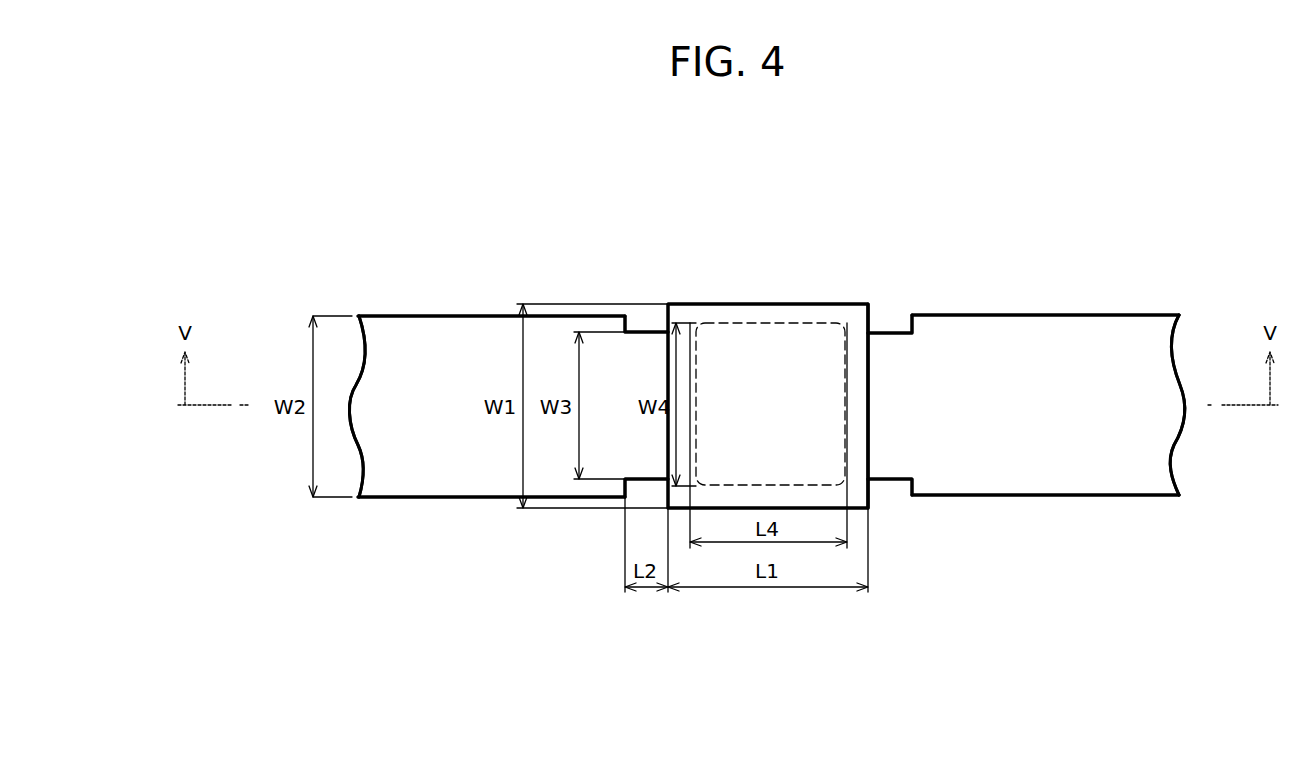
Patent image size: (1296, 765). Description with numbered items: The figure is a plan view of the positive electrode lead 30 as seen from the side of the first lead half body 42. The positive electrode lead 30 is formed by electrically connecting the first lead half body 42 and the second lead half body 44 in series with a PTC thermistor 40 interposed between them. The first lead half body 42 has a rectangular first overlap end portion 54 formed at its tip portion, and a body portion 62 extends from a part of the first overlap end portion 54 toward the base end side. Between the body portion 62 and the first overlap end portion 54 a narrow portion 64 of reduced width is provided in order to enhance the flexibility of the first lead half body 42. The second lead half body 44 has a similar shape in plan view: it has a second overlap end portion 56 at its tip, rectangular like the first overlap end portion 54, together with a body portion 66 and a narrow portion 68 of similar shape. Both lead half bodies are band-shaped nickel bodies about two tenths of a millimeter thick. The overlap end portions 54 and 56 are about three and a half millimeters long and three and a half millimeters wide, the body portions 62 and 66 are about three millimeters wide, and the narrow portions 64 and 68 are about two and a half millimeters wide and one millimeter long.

The positive electrode lead 30 is at (858, 238).
The PTC thermistor 40 is at (736, 325).
The first lead half body 42 is at (434, 313).
The second lead half body 44 is at (1040, 498).
The first overlap end portion 54 is at (818, 316).
The second overlap end portion 56 is at (870, 456).
The body portion 62 is at (432, 444).
The narrow portion 64 is at (650, 330).
The body portion 66 is at (1045, 355).
The narrow portion 68 is at (892, 331).